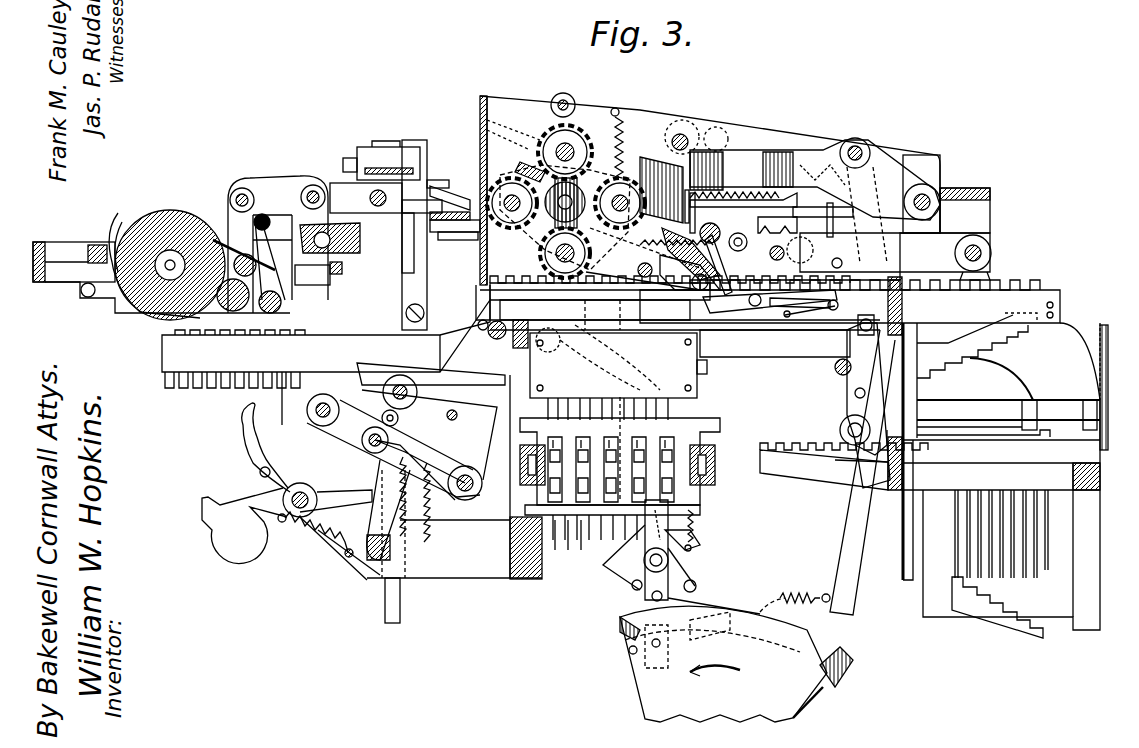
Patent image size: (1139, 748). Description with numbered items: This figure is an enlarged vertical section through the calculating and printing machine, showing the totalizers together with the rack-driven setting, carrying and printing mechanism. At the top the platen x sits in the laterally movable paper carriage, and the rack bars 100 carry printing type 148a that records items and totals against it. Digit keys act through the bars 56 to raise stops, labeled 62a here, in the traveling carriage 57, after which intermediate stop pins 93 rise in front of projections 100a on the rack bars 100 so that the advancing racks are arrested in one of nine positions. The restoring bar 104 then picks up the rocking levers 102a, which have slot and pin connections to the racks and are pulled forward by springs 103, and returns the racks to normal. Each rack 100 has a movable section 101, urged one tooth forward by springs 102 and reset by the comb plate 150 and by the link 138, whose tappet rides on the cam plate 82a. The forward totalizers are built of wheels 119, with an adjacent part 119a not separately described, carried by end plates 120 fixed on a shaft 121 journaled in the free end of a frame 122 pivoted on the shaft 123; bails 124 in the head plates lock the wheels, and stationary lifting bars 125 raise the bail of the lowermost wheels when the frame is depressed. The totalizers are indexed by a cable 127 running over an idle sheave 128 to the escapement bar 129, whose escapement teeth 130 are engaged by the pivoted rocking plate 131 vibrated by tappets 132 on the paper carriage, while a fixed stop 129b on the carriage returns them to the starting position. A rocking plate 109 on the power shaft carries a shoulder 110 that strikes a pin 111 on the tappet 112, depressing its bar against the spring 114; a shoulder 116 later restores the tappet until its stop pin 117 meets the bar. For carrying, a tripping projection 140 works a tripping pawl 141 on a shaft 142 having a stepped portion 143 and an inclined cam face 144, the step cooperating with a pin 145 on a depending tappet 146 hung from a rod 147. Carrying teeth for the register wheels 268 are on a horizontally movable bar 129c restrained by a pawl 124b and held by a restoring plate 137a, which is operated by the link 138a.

The platen x is at (176, 222).
The tappets 132 is at (380, 147).
The pivoted rocking plate 131 is at (402, 298).
The escapement teeth 130 is at (403, 218).
The escapement bar 129 is at (402, 240).
The fixed stop 129b is at (432, 180).
The horizontally movable bar 129c is at (805, 220).
The idle sheave 128 is at (462, 185).
The cable 127 is at (448, 232).
The movable rack section 101 is at (480, 272).
The springs 102 is at (476, 300).
The rocking levers 102a is at (852, 383).
The comb plate 150 is at (488, 330).
The rack bars 100 is at (611, 326).
The projections 100a is at (618, 376).
The printing type 148a is at (225, 390).
The totalizer wheels 119 is at (588, 128).
The gear key 119a is at (538, 150).
The lifting bars 125 is at (515, 178).
The shaft 121 is at (622, 183).
The end plates 120 is at (540, 250).
The frame 122 is at (800, 150).
The restoring plate 137a is at (760, 160).
The shaft 123 is at (935, 192).
The bails 124 is at (648, 255).
The pawl 124b is at (743, 212).
The rod 147 is at (680, 235).
The shaft 142 is at (675, 254).
The inclined cam face 144 is at (690, 272).
The pin 145 is at (771, 259).
The stepped portion 143 is at (770, 305).
The register wheels 268 is at (822, 313).
The tripping projection 140 is at (685, 303).
The tripping pawl 141 is at (595, 315).
The link 138 is at (598, 357).
The intermediate stop pins 93 is at (685, 404).
The traveling carriage 57 is at (715, 460).
The bar 62a is at (675, 490).
The bars 56 is at (575, 545).
The spring 114 is at (692, 523).
The link 138a is at (700, 540).
The tappet 112 is at (635, 550).
The pin 111 is at (685, 567).
The stop pin 117 is at (632, 587).
The shoulder 116 is at (689, 590).
The rocking plate 109 is at (714, 596).
The springs 103 is at (795, 586).
The cam plate 82a is at (620, 645).
The shoulder 110 is at (848, 650).
The depending tappet 146 is at (775, 343).
The restoring bar 104 is at (835, 368).